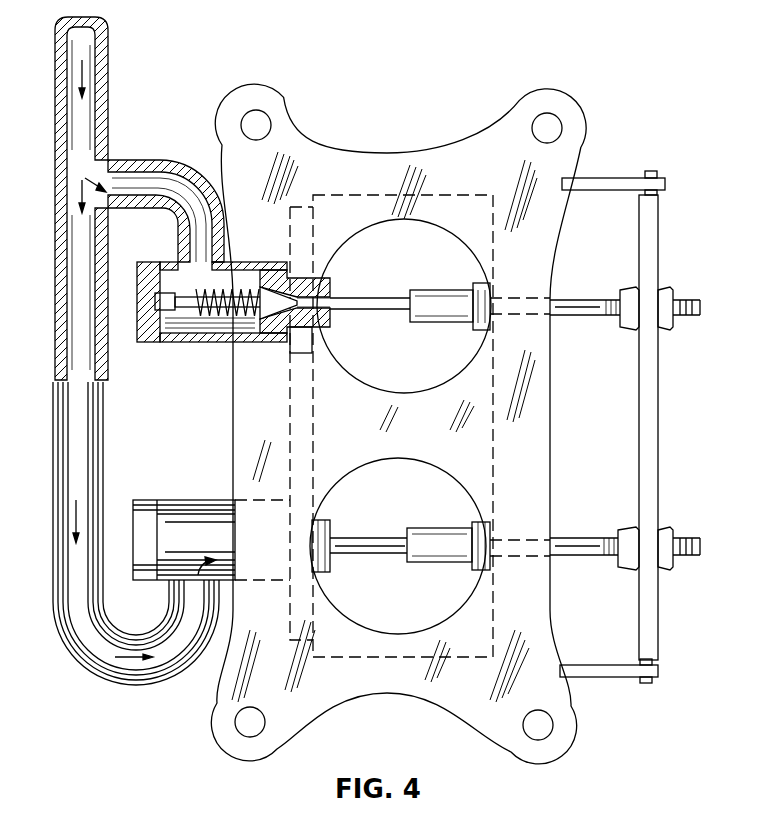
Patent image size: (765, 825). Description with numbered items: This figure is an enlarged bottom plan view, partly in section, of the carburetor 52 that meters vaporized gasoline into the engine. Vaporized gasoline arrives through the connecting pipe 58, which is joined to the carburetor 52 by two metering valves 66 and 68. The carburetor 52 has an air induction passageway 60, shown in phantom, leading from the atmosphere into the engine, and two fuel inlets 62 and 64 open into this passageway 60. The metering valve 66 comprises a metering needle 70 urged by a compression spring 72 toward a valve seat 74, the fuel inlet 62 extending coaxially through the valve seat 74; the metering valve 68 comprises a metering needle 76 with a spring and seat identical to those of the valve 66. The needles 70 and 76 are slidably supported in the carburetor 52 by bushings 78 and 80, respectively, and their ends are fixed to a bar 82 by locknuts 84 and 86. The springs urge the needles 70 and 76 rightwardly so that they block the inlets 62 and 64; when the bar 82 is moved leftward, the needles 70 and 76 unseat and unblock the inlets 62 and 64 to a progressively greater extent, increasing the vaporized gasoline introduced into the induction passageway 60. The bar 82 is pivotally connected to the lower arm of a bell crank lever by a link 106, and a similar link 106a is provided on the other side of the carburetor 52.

The carburetor 52 is at (385, 152).
The connecting pipe 58 is at (57, 150).
The air induction passageway 60 is at (493, 450).
The fuel inlet 62 is at (338, 292).
The fuel inlet 64 is at (332, 520).
The metering valve 66 is at (175, 342).
The metering valve 68 is at (205, 500).
The metering needle 70 is at (258, 338).
The compression spring 72 is at (228, 322).
The valve seat 74 is at (282, 262).
The metering needle 76 is at (358, 553).
The bushing 78 is at (440, 322).
The bushing 80 is at (420, 527).
The bar 82 is at (648, 432).
The locknuts 84 is at (665, 288).
The locknuts 86 is at (665, 528).
The link 106 is at (600, 680).
The link 106a is at (600, 179).